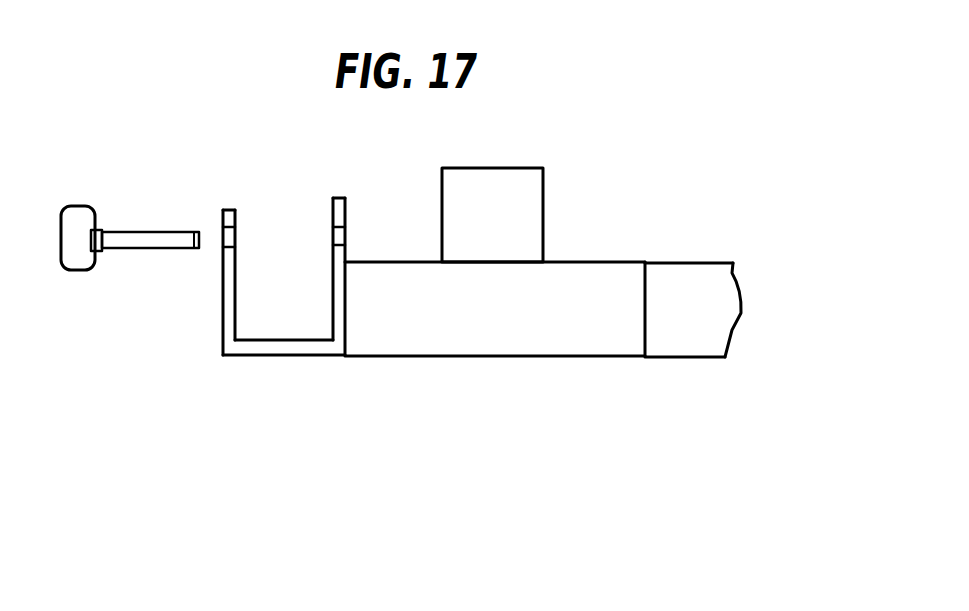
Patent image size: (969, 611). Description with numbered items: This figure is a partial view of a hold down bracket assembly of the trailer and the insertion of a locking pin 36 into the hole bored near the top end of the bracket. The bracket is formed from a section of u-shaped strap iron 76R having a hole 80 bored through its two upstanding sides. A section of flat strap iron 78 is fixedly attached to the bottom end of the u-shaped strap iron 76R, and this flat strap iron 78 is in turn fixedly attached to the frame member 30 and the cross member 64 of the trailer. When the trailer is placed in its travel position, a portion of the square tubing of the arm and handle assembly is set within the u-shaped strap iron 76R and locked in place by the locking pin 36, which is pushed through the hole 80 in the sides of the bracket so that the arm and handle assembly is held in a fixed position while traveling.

The frame member 30 is at (492, 220).
The locking pin 36 is at (117, 250).
The cross member 64 is at (698, 325).
The u-shaped strap iron 76R is at (262, 355).
The flat strap iron 78 is at (402, 328).
The hole 80 is at (335, 246).